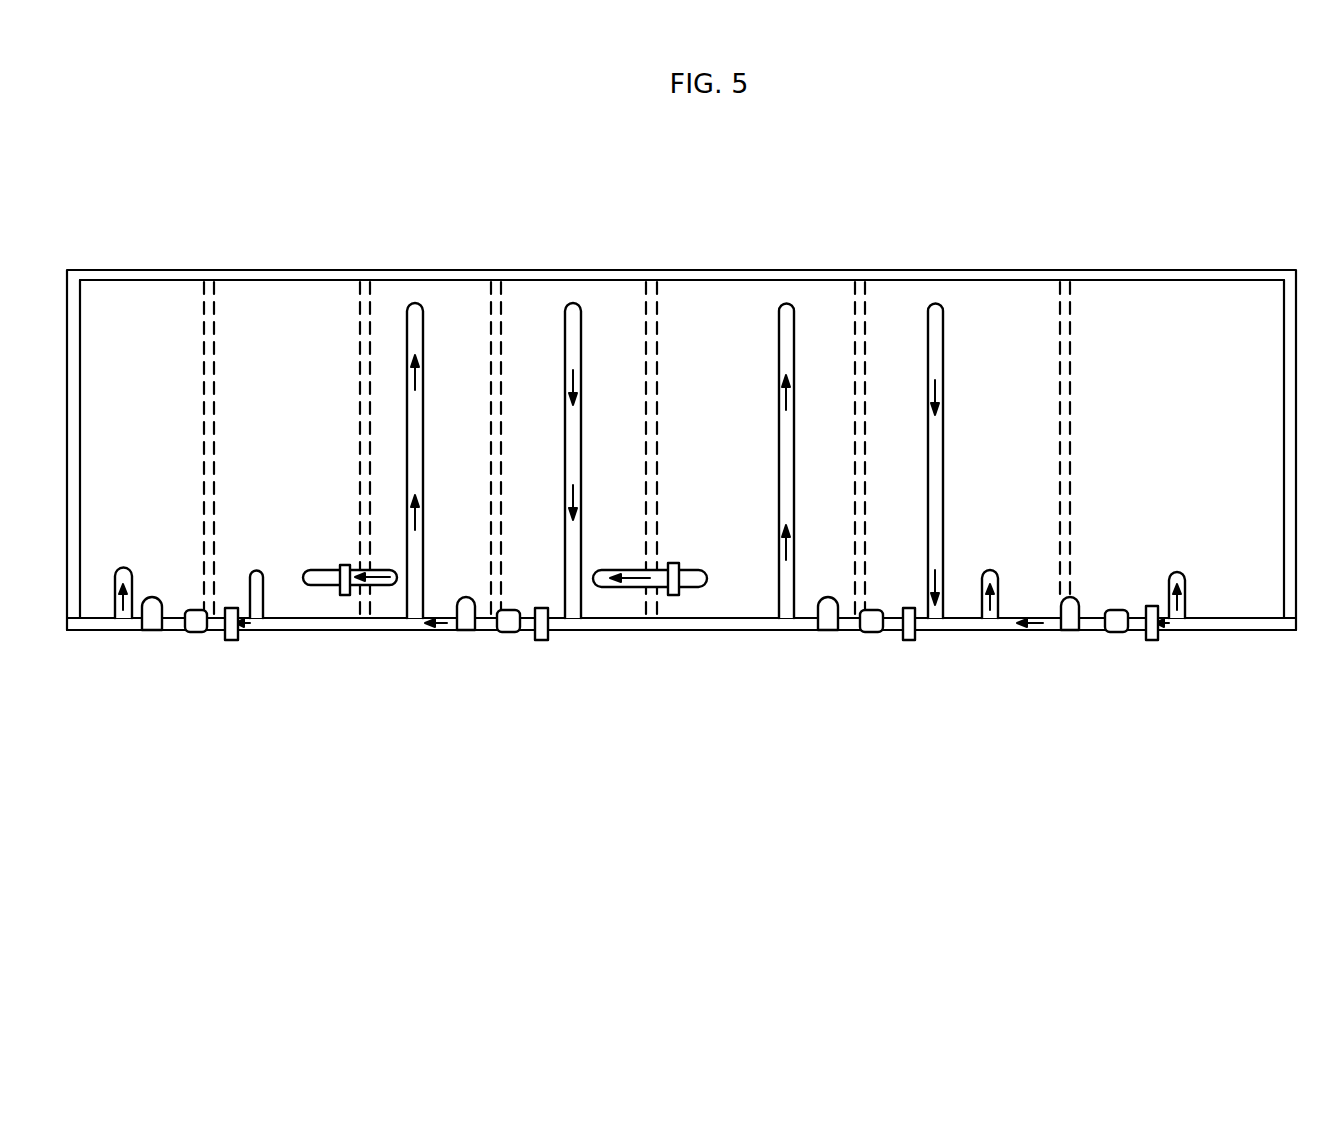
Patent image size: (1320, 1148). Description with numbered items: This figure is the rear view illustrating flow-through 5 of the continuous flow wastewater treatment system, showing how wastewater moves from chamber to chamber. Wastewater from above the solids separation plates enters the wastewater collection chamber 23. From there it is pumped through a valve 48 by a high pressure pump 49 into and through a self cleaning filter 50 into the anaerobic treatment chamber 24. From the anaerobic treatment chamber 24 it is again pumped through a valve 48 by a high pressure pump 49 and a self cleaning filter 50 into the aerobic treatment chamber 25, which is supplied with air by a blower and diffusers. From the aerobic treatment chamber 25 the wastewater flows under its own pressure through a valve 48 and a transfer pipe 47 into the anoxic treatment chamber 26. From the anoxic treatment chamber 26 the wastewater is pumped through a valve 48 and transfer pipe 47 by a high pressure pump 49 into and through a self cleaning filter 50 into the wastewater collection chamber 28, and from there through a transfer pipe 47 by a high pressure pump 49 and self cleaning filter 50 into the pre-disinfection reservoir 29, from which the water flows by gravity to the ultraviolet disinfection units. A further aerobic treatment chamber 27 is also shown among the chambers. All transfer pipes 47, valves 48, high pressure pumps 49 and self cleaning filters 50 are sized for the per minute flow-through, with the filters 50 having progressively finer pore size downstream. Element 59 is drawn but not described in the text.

The rear view illustrating flow-through 5 is at (58, 563).
The wastewater collection chamber 23 is at (1175, 290).
The anaerobic treatment chamber 24 is at (997, 290).
The aerobic treatment chamber 25 is at (735, 288).
The anoxic treatment chamber 26 is at (618, 288).
The aerobic treatment chamber 27 is at (460, 288).
The wastewater collection chamber 28 is at (283, 297).
The pre-disinfection reservoir 29 is at (133, 288).
The transfer pipe 47 is at (415, 303).
The valve 48 is at (347, 596).
The high pressure pump 49 is at (196, 633).
The self cleaning filter 50 is at (152, 631).
The sensor 59 is at (466, 631).